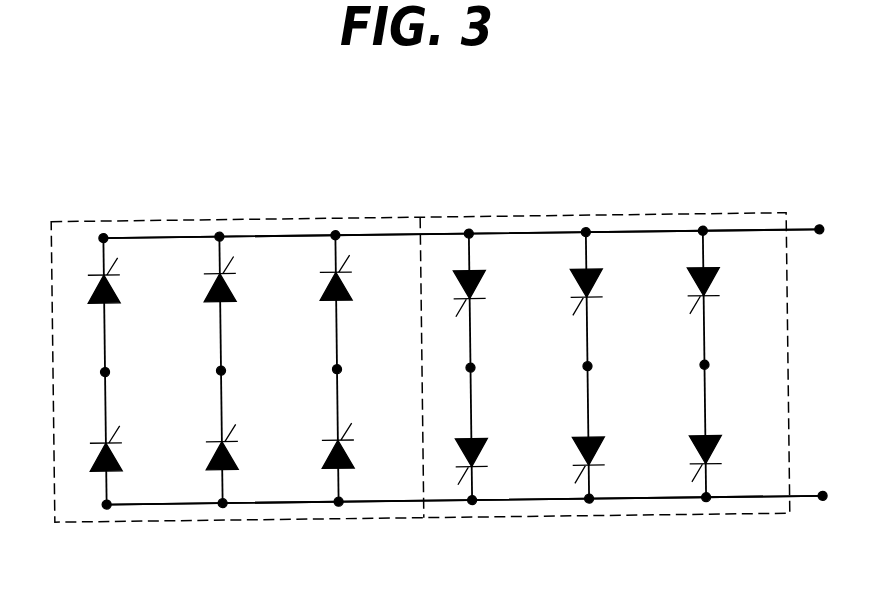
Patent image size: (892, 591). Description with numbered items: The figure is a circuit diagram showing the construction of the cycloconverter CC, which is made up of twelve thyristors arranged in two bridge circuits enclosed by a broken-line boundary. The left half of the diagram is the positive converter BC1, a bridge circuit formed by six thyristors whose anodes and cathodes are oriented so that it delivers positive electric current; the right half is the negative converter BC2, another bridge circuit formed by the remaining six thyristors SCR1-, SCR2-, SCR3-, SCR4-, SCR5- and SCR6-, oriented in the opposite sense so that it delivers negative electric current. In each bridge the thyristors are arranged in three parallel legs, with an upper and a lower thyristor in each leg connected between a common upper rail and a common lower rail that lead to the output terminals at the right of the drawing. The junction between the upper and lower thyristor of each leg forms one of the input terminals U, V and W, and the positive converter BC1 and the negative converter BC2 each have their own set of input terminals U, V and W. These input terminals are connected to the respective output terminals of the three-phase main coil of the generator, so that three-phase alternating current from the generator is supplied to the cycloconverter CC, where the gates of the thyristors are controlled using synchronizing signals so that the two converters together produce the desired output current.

The cycloconverter CC is at (311, 170).
The positive converter BC1 is at (373, 203).
The negative converter BC2 is at (786, 216).
The thyristor SCR1- is at (501, 291).
The thyristor SCR2- is at (618, 289).
The thyristor SCR3- is at (735, 288).
The thyristor SCR4- is at (503, 464).
The thyristor SCR5- is at (620, 462).
The thyristor SCR6- is at (737, 461).
The input terminal U is at (120, 372).
The input terminal V is at (236, 370).
The input terminal W is at (354, 370).